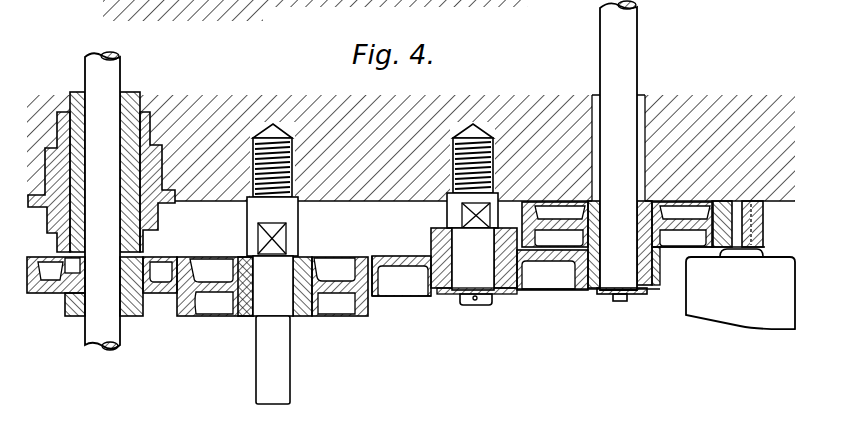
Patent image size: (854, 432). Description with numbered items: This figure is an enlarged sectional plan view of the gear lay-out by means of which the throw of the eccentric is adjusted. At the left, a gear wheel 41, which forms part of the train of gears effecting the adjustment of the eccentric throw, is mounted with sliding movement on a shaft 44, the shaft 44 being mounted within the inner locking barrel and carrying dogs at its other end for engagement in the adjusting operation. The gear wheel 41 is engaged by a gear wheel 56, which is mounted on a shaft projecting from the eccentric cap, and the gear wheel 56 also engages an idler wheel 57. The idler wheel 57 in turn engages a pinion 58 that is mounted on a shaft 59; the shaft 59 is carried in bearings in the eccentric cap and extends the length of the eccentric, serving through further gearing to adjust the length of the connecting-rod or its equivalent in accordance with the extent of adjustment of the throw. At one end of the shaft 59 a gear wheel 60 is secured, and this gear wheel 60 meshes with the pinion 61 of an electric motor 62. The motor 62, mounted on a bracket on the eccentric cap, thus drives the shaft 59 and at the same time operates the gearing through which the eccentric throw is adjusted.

The gear wheel 41 is at (57, 287).
The shaft 44 is at (102, 86).
The gear wheel 56 is at (360, 314).
The idler wheel 57 is at (500, 303).
The pinion 58 is at (598, 290).
The shaft 59 is at (617, 43).
The gear wheel 60 is at (683, 237).
The pinion 61 is at (763, 213).
The electric motor 62 is at (737, 283).